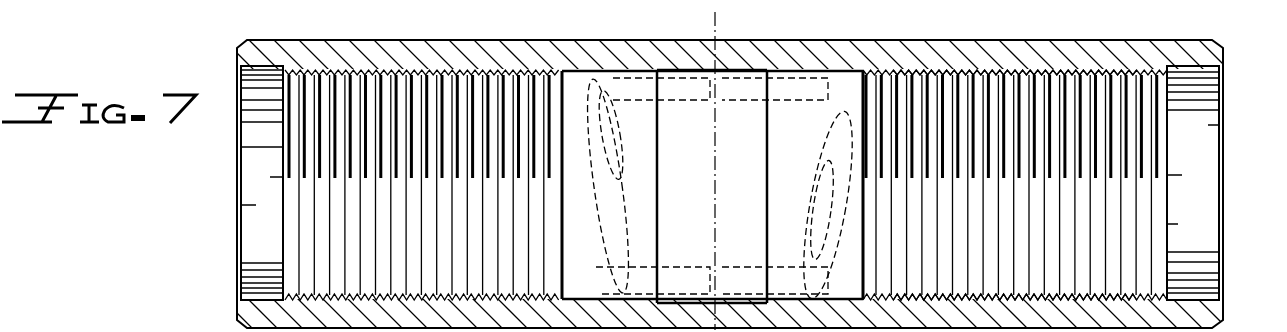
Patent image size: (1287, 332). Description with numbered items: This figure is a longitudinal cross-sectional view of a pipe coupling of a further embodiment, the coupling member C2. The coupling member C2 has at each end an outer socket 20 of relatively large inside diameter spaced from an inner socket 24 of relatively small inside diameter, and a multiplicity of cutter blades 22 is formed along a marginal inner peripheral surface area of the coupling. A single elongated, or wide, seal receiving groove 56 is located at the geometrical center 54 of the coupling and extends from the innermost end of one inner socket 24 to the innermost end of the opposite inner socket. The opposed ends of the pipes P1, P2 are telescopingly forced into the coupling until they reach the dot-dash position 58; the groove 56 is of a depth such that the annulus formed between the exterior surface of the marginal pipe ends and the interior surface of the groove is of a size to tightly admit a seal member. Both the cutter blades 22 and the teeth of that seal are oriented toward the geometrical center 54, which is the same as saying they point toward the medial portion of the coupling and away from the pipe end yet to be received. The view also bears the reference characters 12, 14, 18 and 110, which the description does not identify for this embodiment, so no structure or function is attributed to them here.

The first threaded coupling member 12 is at (352, 32).
The second threaded coupling member 14 is at (1068, 32).
The end cap 18 is at (1226, 94).
The outer socket 20 is at (1226, 126).
The cutter blades 22 is at (1158, 168).
The inner socket 24 is at (604, 193).
The geometrical center 54 is at (714, 22).
The seal receiving groove 56 is at (725, 297).
The dot-dash position 58 is at (722, 151).
The coupling body 110 is at (727, 34).
The coupling member C2 is at (468, 32).
The pipe P1 is at (834, 118).
The pipe P2 is at (588, 123).